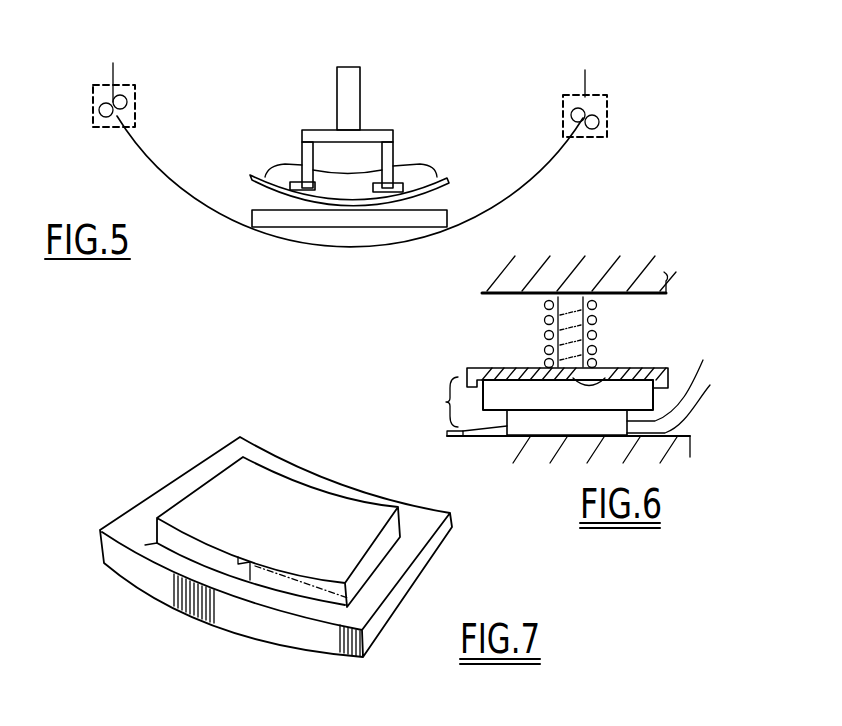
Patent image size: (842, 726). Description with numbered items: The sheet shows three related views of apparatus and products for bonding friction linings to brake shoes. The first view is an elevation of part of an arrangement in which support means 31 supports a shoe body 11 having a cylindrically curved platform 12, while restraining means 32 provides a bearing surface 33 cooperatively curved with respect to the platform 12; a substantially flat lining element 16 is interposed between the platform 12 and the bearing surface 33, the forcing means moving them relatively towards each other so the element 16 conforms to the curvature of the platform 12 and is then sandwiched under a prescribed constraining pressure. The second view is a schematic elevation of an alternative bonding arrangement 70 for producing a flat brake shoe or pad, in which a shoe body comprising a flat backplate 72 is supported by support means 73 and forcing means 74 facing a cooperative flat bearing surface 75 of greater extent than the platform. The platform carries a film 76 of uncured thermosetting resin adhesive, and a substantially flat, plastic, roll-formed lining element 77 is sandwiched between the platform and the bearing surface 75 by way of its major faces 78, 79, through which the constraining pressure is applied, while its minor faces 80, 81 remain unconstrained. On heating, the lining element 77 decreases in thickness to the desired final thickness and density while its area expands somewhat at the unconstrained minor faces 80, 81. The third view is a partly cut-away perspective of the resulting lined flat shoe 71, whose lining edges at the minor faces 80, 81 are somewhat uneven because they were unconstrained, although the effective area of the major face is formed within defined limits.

In FIG. 5, the shoe body 11 is at (428, 163).
In FIG. 5, the cylindrically curved platform 12 is at (450, 190).
In FIG. 5, the lining element 16 is at (253, 210).
In FIG. 5, the support means 31 is at (393, 130).
In FIG. 5, the restraining means 32 is at (563, 158).
In FIG. 5, the bearing surface 33 is at (150, 157).
In FIG. 6, the bonding arrangement 70 is at (453, 331).
In FIG. 6, the flat shoe 71 is at (446, 402).
In FIG. 7, the flat shoe 71 is at (298, 466).
In FIG. 6, the flat backplate 72 is at (477, 369).
In FIG. 7, the flat backplate 72 is at (120, 515).
In FIG. 6, the support means 73 is at (520, 368).
In FIG. 6, the forcing means 74 is at (597, 330).
In FIG. 6, the flat bearing surface 75 is at (675, 443).
In FIG. 6, the film of uncured thermosetting resin adhesive 76 is at (674, 377).
In FIG. 6, the lining element 77 is at (503, 430).
In FIG. 7, the lining element 77 is at (140, 545).
In FIG. 6, the major face 78 is at (523, 438).
In FIG. 7, the major face 78 is at (227, 477).
In FIG. 6, the major face 79 is at (628, 367).
In FIG. 6, the minor face 80 is at (683, 398).
In FIG. 7, the minor face 80 is at (177, 497).
In FIG. 6, the minor face 81 is at (447, 436).
In FIG. 7, the minor face 81 is at (153, 598).